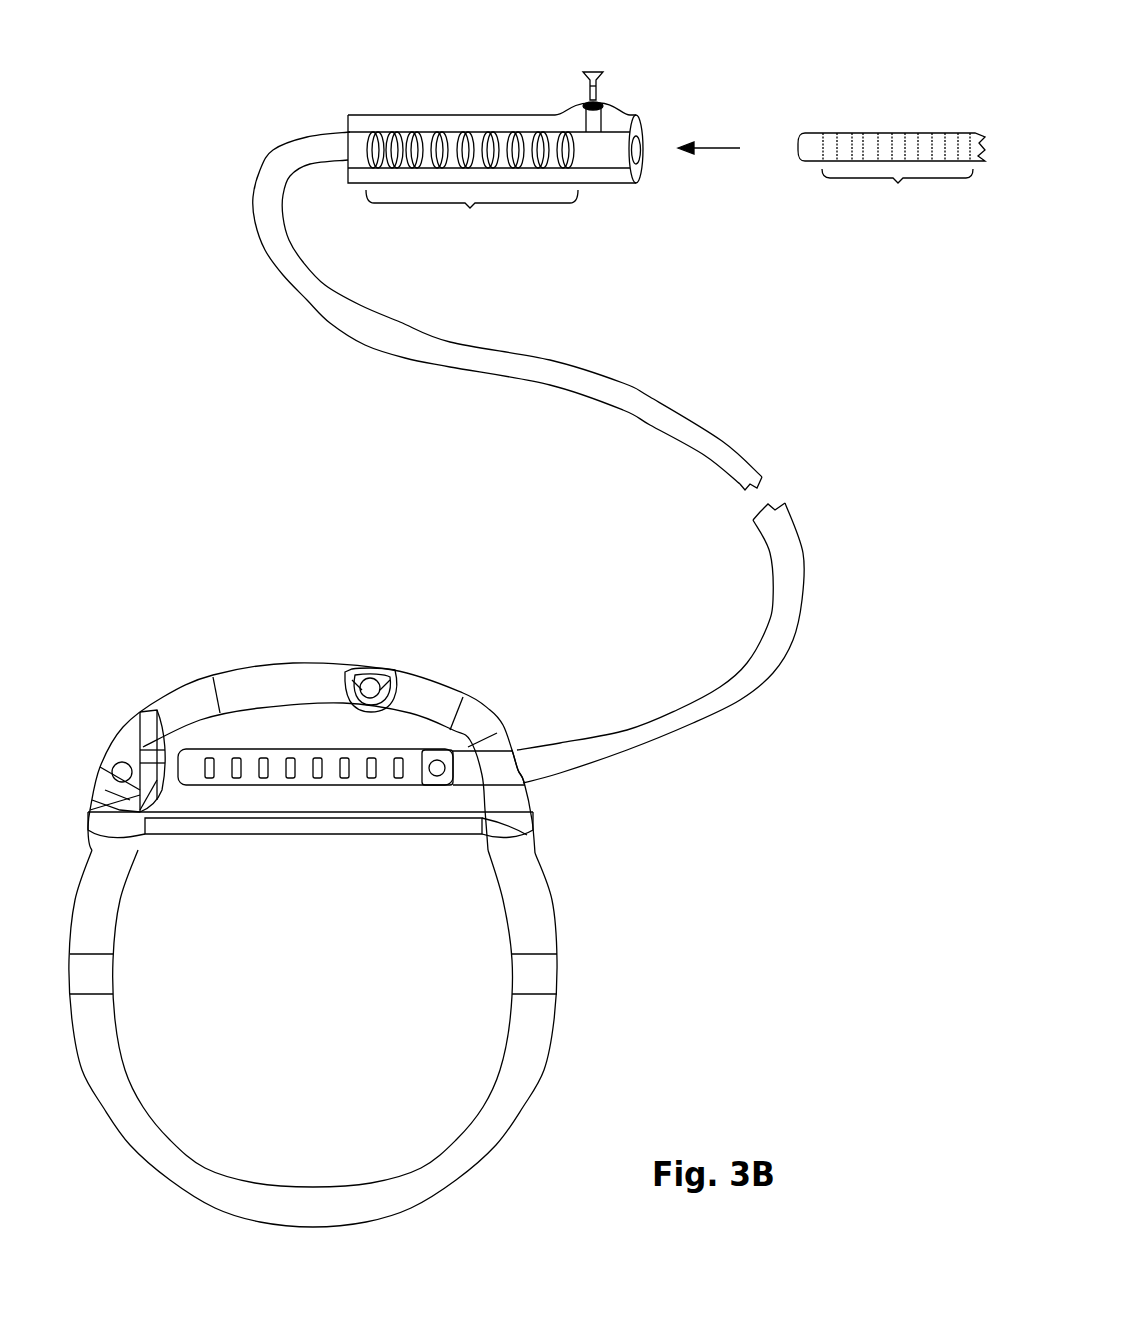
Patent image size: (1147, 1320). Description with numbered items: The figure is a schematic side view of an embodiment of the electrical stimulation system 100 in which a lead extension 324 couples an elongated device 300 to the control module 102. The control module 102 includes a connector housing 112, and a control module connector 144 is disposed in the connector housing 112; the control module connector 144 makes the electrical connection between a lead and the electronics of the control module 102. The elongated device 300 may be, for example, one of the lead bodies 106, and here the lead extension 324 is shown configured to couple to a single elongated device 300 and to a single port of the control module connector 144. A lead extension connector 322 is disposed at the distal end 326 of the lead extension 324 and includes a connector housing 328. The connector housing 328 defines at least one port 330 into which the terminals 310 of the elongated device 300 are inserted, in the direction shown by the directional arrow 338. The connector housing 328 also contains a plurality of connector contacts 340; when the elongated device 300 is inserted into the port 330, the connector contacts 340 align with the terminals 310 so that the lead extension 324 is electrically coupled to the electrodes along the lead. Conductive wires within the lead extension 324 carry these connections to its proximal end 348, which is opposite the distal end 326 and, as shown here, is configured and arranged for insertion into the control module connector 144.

The electrical stimulation system 100 is at (762, 365).
The control module 102 is at (620, 979).
The lead body 106 is at (895, 132).
The connector housing 112 is at (415, 693).
The control module connector 144 is at (258, 749).
The elongated device 300 is at (858, 100).
The terminals 310 is at (897, 189).
The lead extension connector 322 is at (452, 115).
The lead extension 324 is at (623, 383).
The distal end 326 is at (340, 105).
The connector housing 328 is at (398, 127).
The port 330 is at (660, 173).
The directional arrow 338 is at (718, 148).
The connector contacts 340 is at (472, 215).
The proximal end 348 is at (537, 715).